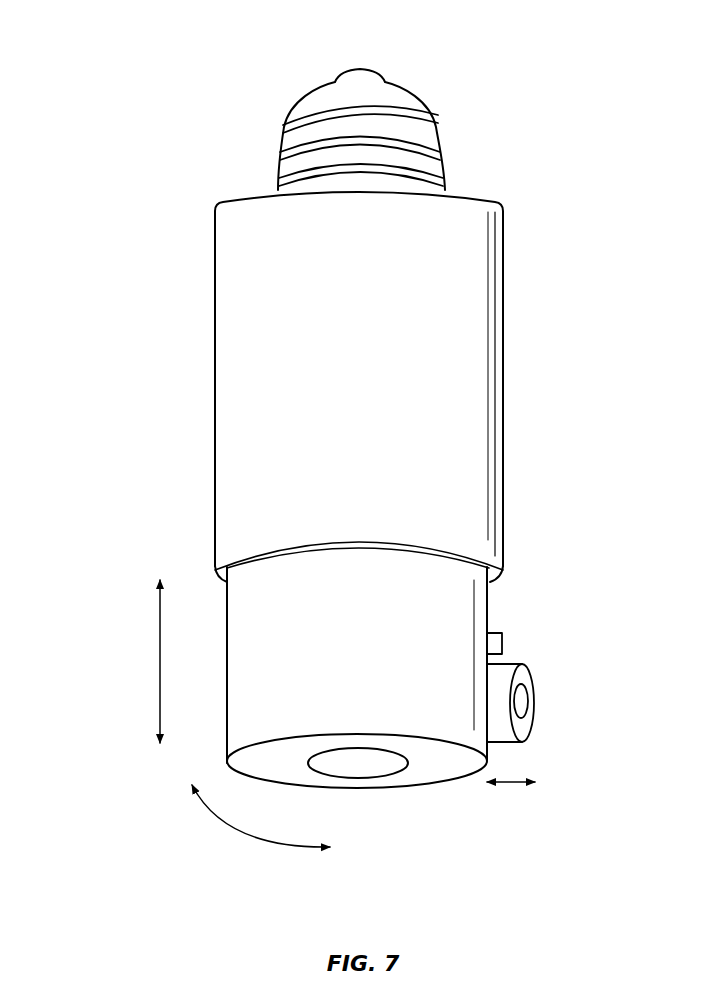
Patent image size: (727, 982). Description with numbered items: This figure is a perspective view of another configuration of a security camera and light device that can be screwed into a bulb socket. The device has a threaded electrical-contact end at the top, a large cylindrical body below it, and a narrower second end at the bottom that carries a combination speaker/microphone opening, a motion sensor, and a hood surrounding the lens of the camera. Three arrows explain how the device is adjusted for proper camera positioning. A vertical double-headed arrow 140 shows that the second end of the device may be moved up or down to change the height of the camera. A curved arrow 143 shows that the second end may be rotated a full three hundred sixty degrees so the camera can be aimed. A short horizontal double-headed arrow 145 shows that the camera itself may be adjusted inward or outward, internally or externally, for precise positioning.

The arrow 140 is at (158, 666).
The arrow 143 is at (242, 837).
The arrow 145 is at (510, 783).